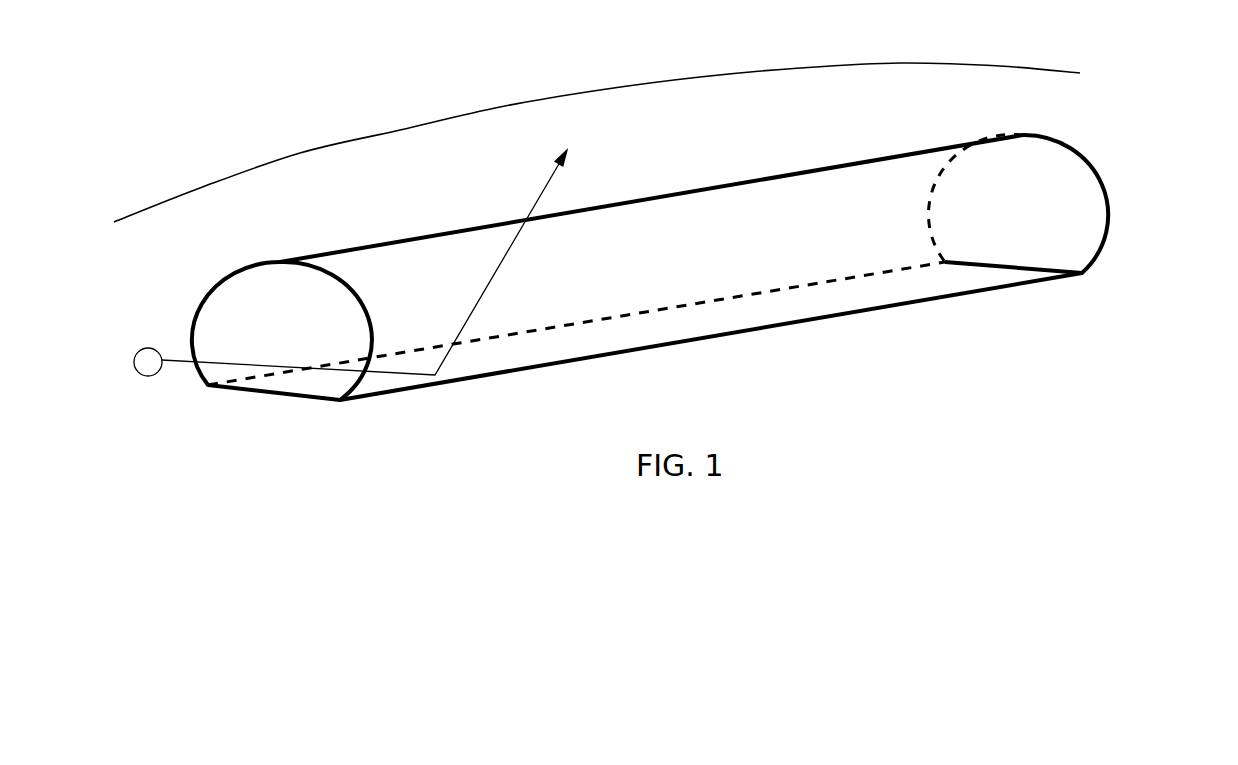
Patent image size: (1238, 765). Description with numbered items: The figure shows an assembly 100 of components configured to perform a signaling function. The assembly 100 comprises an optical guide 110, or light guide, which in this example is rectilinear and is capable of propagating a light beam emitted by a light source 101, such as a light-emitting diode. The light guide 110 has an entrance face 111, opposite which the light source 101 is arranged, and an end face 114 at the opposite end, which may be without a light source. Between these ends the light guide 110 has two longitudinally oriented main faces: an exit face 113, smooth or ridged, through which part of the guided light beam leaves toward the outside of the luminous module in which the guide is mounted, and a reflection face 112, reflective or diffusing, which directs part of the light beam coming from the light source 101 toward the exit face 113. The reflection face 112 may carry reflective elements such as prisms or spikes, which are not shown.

The assembly 100 is at (597, 141).
The light source 101 is at (140, 375).
The optical guide 110 is at (681, 244).
The entrance face 111 is at (262, 352).
The reflection face 112 is at (730, 318).
The exit face 113 is at (506, 221).
The end face 114 is at (1072, 198).